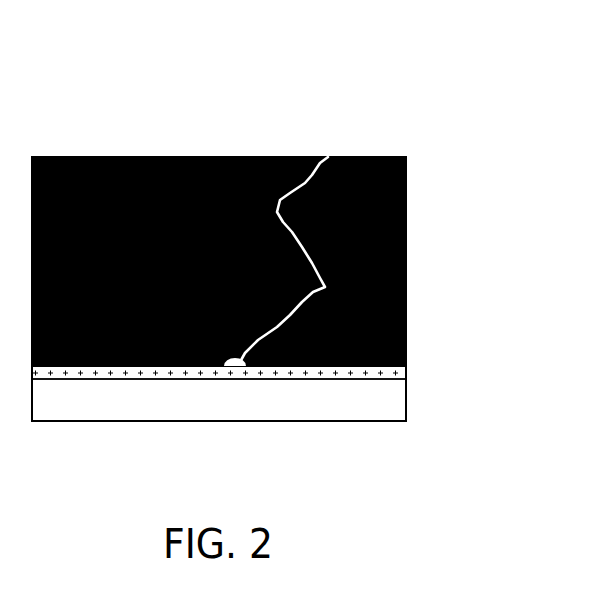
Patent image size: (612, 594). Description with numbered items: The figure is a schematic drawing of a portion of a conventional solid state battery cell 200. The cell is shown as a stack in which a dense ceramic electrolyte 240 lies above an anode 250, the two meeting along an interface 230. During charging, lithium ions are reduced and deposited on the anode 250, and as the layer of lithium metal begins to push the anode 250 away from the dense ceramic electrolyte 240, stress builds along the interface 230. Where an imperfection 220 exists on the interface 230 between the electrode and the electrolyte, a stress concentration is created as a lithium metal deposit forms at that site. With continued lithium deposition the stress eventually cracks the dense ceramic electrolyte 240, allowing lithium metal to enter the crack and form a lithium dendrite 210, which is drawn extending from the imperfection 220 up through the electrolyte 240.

The conventional solid state battery cell 200 is at (262, 251).
The lithium dendrite 210 is at (328, 157).
The imperfection 220 is at (242, 392).
The interface 230 is at (406, 371).
The dense ceramic electrolyte 240 is at (406, 171).
The anode 250 is at (385, 422).